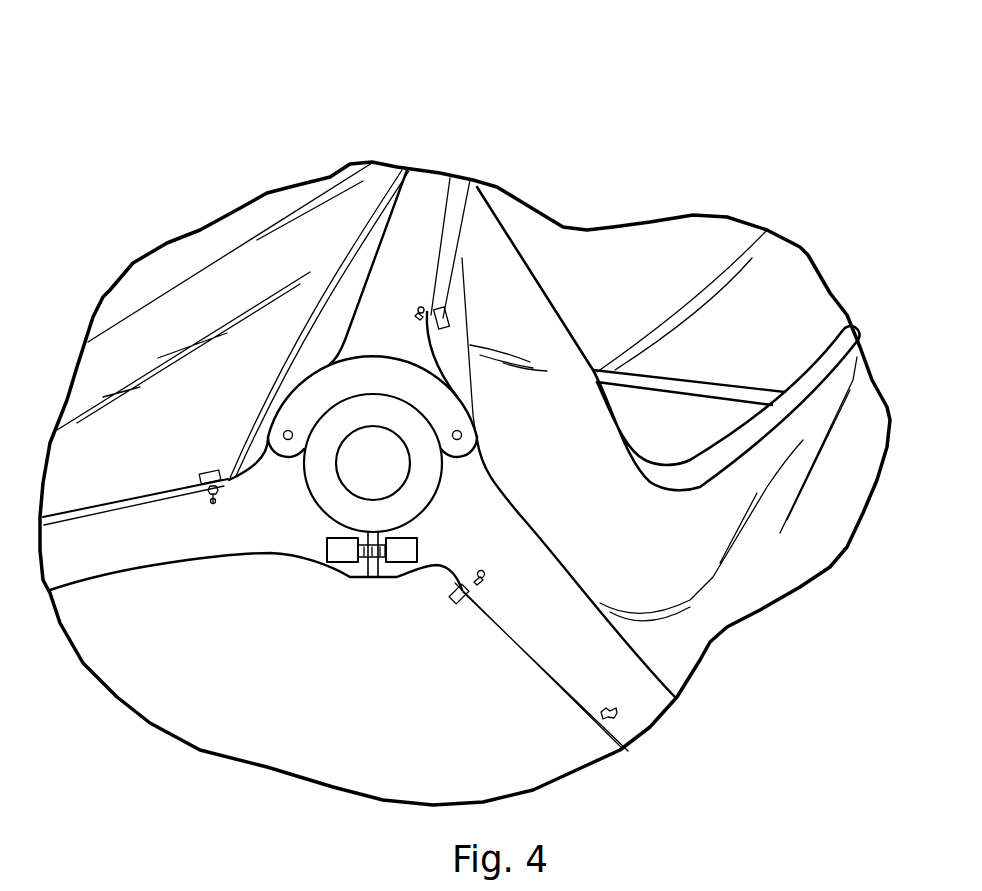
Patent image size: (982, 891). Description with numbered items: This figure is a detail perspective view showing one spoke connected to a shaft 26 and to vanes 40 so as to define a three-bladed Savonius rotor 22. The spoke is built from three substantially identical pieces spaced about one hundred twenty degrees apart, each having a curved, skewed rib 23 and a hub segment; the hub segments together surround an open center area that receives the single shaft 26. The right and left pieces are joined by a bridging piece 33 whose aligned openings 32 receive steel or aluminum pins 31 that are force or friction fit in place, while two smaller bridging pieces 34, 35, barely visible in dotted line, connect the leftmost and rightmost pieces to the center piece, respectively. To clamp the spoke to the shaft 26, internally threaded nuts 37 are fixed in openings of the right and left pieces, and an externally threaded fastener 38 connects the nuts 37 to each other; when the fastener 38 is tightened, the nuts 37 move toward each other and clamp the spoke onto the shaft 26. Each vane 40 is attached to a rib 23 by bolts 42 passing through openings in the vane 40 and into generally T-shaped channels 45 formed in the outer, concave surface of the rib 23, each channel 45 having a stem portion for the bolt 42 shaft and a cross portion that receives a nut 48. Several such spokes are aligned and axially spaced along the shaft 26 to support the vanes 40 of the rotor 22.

The rotor 22 is at (659, 170).
The rib 23 is at (445, 221).
The shaft 26 is at (332, 482).
The pins 31 is at (277, 449).
The openings 32 is at (290, 434).
The bridging piece 33 is at (445, 408).
The bridging piece 34 is at (318, 364).
The bridging piece 35 is at (442, 406).
The nuts 37 is at (347, 555).
The externally threaded fastener 38 is at (373, 578).
The vanes 40 is at (145, 342).
The bolts 42 is at (204, 481).
The T-shaped channels 45 is at (464, 177).
The nut 48 is at (211, 505).